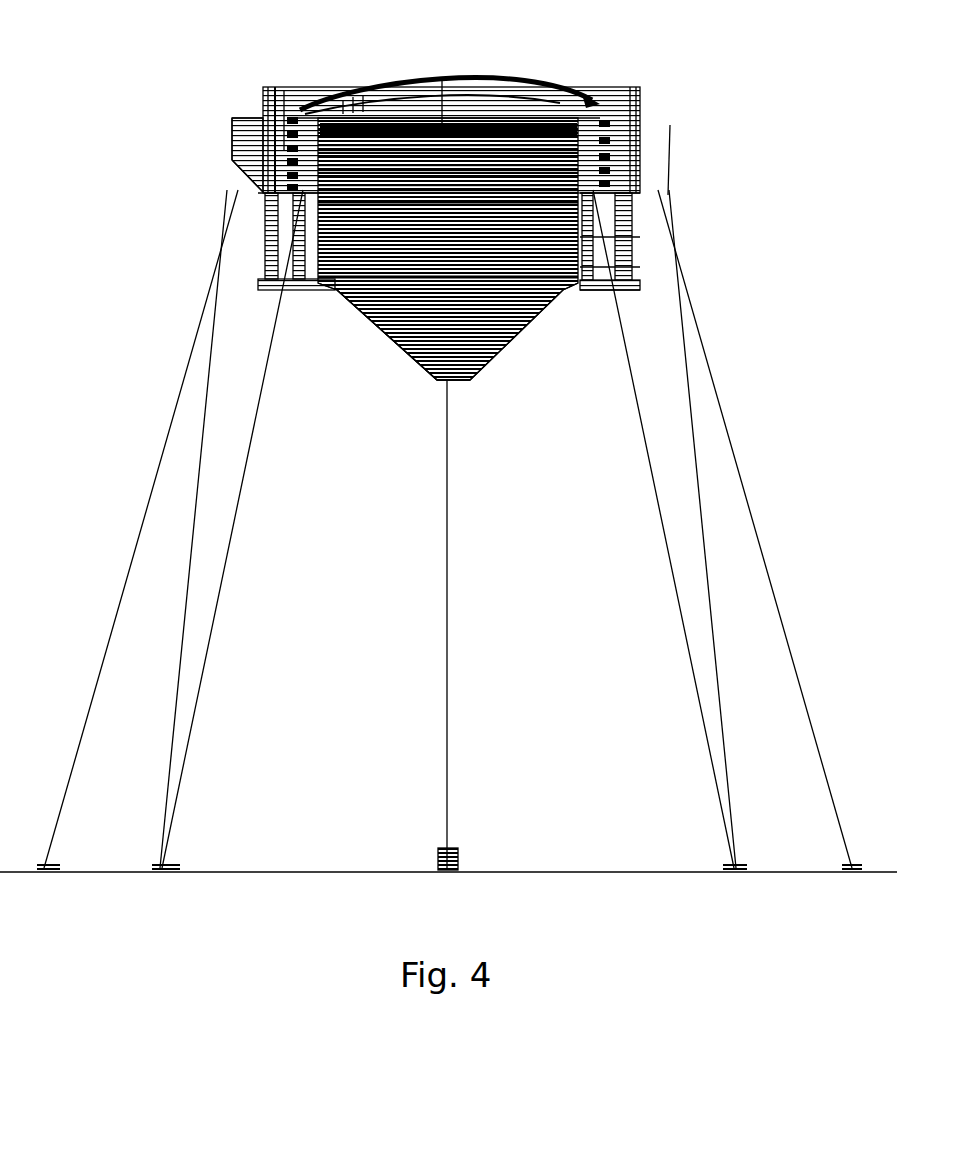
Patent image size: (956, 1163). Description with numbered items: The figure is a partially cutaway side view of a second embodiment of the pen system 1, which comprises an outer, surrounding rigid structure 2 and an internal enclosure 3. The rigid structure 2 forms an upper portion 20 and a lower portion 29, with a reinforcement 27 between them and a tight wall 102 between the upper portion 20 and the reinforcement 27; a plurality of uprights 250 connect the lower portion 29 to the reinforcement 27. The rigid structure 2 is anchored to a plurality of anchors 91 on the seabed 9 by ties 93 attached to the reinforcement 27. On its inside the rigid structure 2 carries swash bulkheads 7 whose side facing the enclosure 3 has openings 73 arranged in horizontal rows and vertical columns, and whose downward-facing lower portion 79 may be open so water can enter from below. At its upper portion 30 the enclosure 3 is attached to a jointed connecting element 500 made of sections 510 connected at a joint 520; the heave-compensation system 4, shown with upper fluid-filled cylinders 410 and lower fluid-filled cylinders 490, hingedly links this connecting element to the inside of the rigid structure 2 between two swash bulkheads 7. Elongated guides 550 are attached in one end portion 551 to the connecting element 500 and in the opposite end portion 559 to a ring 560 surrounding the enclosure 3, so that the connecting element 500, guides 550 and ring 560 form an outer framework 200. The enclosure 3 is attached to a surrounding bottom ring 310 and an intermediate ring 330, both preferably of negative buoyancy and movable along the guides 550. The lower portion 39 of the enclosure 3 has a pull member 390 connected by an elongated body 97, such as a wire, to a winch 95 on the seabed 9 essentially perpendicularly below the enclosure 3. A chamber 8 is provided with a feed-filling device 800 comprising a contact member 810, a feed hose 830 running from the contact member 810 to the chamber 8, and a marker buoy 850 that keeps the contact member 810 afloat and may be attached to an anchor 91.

The pen system 1 is at (186, 262).
The outer rigid structure 2 is at (630, 100).
The internal enclosure 3 is at (377, 310).
The heave-compensation system 4 is at (242, 147).
The swash bulkhead 7 is at (615, 172).
The chamber 8 is at (290, 112).
The seabed 9 is at (680, 872).
The upper portion 20 is at (633, 90).
The reinforcement 27 is at (262, 205).
The lower portion 29 is at (638, 287).
The upper portion of the enclosure 30 is at (480, 150).
The lower portion of the enclosure 39 is at (437, 357).
The openings 73 is at (617, 147).
The lower portion of the swash bulkhead 79 is at (608, 187).
The anchors 91 is at (727, 865).
The ties 93 is at (142, 528).
The winch 95 is at (443, 858).
The elongated body 97 is at (443, 660).
The tight wall 102 is at (672, 125).
The outer framework 200 is at (605, 308).
The uprights 250 is at (263, 243).
The bottom ring 310 is at (523, 277).
The intermediate ring 330 is at (537, 207).
The pull member 390 is at (442, 383).
The upper fluid-filled cylinders 410 is at (284, 90).
The lower fluid-filled cylinders 490 is at (280, 112).
The jointed connecting element 500 is at (368, 127).
The sections 510 is at (548, 95).
The joint 520 is at (442, 80).
The elongated guides 550 is at (590, 237).
The end portion of guide 551 is at (590, 133).
The opposite end portion of guide 559 is at (590, 267).
The ring 560 is at (605, 290).
The feed-filling device 800 is at (238, 152).
The contact member 810 is at (245, 160).
The feed hose 830 is at (250, 180).
The marker buoy 850 is at (262, 128).